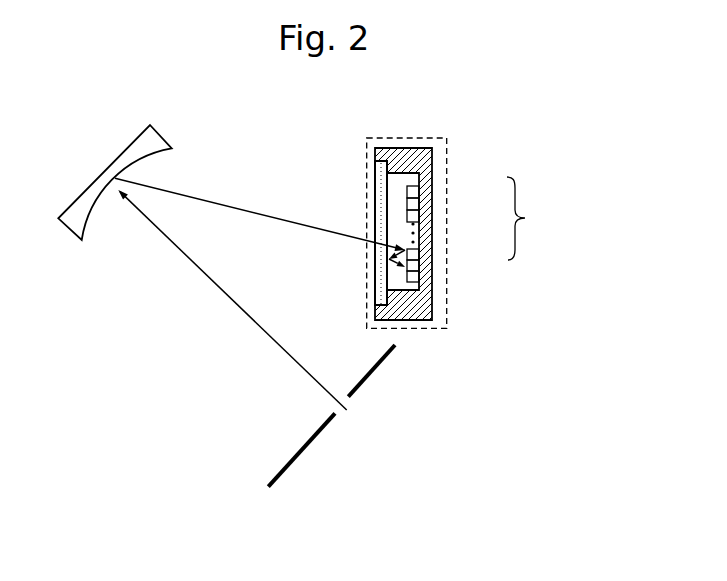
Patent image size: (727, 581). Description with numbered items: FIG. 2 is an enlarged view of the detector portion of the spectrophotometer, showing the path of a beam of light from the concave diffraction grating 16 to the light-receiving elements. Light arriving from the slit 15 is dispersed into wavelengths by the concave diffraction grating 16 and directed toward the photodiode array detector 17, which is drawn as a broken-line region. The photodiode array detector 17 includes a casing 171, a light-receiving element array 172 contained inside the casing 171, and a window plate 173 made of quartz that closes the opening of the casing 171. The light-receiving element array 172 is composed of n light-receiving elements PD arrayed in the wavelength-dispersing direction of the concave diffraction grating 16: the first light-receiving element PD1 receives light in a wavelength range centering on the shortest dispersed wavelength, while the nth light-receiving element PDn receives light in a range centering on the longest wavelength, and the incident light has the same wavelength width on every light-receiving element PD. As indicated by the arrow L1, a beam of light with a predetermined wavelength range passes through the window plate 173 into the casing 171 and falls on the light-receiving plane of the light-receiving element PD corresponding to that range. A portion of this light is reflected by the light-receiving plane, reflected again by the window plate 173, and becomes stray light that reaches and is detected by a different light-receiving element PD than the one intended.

The slit 15 is at (302, 442).
The concave diffraction grating 16 is at (132, 142).
The photodiode array detector 17 is at (420, 133).
The casing 171 is at (432, 157).
The light-receiving element array 172 is at (407, 227).
The window plate 173 is at (375, 172).
The first light-receiving element PD1 is at (417, 190).
The nth light-receiving element PDn is at (418, 275).
The light-receiving element PD is at (531, 218).
The arrow indicating beam of light L1 is at (212, 202).